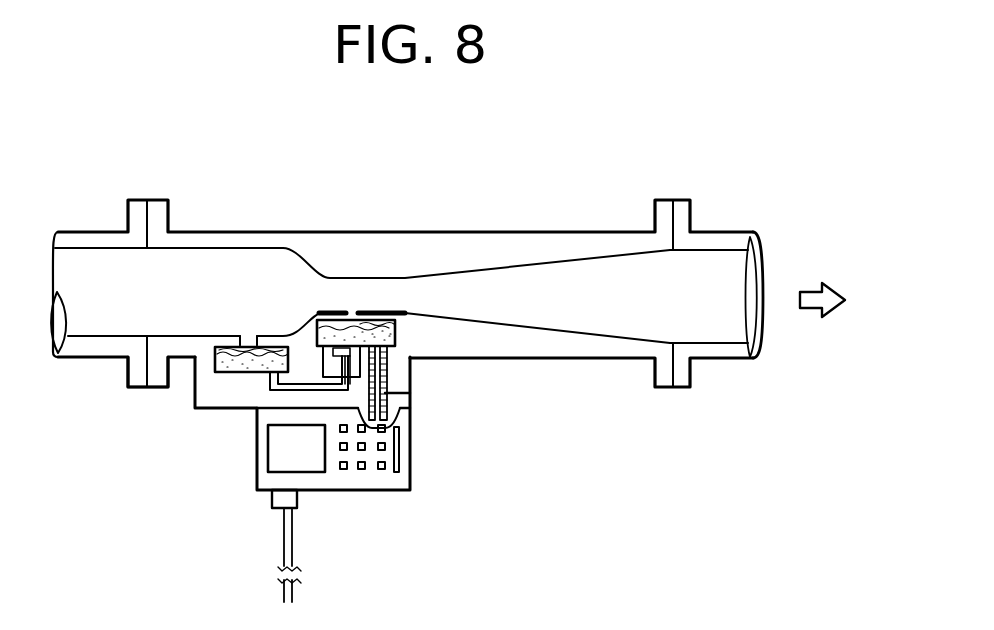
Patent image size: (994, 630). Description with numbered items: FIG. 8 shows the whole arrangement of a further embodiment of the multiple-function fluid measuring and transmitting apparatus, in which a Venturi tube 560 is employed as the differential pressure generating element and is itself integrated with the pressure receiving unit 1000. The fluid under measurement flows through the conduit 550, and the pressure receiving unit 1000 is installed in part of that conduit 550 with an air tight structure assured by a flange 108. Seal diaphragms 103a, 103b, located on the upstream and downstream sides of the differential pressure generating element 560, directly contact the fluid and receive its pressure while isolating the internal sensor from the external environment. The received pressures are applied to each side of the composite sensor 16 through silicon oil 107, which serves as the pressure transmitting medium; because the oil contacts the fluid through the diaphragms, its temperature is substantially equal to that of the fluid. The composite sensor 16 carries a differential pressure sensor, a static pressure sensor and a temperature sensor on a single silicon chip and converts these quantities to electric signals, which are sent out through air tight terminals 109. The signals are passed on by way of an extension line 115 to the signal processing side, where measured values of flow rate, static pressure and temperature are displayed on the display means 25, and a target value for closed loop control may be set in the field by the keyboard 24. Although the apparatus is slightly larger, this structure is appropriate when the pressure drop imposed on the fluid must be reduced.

The conduit 550 is at (85, 230).
The Venturi tube 560 is at (403, 247).
The pressure receiving unit 1000 is at (215, 408).
The flange 108 is at (130, 373).
The silicon oil 107 is at (233, 372).
The seal diaphragm 103b is at (230, 345).
The composite sensor 16 is at (342, 328).
The seal diaphragm 103a is at (377, 328).
The air tight terminals 109 is at (410, 394).
The display means 25 is at (275, 450).
The keyboard 24 is at (377, 478).
The extension line 115 is at (283, 548).